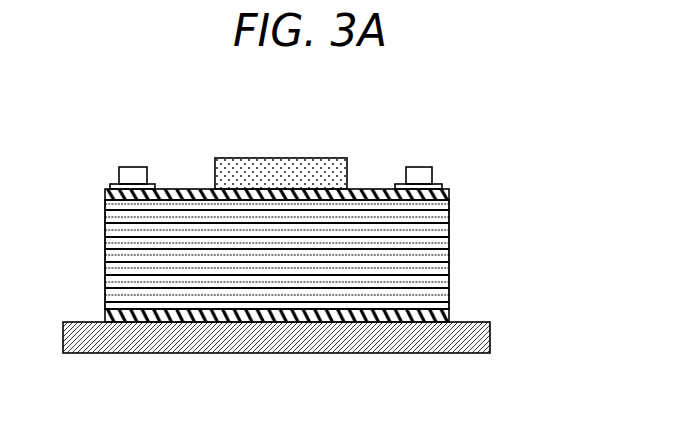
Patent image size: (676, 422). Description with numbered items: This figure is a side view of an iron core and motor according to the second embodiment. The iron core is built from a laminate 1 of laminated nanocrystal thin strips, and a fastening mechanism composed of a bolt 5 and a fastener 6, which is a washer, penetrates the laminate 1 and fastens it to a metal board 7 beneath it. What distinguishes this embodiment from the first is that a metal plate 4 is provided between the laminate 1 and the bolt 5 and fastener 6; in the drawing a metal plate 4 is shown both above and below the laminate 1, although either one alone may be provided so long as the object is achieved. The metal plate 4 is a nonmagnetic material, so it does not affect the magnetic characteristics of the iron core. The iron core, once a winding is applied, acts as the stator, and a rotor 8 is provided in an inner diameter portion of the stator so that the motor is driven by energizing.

The laminate 1 is at (95, 203).
The metal plate 4 is at (450, 197).
The bolt 5 is at (433, 167).
The fastener 6 is at (443, 185).
The metal board 7 is at (433, 343).
The rotor 8 is at (275, 178).